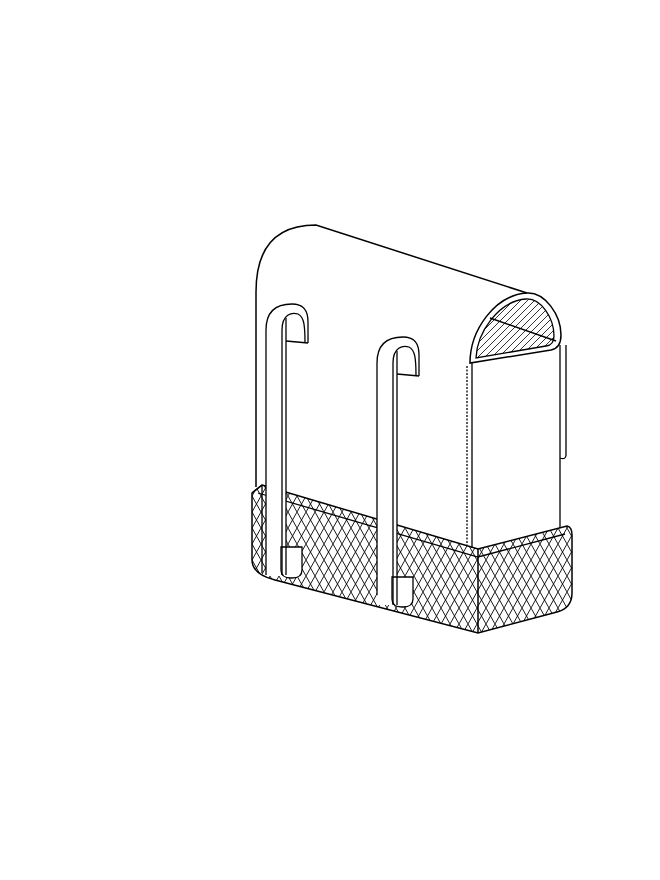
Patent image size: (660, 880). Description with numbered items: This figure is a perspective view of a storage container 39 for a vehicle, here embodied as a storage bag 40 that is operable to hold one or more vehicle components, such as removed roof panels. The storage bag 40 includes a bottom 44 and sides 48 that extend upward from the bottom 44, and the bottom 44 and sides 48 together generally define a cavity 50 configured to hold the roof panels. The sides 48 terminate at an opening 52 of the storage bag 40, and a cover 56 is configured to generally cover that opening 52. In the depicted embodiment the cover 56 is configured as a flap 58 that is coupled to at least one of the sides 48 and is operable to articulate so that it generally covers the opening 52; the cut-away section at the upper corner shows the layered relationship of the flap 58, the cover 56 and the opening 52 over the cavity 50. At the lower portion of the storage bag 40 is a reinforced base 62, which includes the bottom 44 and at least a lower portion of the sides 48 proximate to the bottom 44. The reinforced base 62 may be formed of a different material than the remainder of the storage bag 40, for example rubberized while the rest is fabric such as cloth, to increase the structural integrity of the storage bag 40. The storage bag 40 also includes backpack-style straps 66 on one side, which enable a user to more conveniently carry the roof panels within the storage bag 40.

The storage container 39 is at (351, 150).
The storage bag 40 is at (270, 198).
The bottom 44 is at (357, 610).
The sides 48 is at (447, 466).
The cavity 50 is at (484, 338).
The opening 52 is at (548, 331).
The cover 56 is at (505, 293).
The flap 58 is at (482, 270).
The reinforced base 62 is at (537, 620).
The straps 66 is at (385, 413).